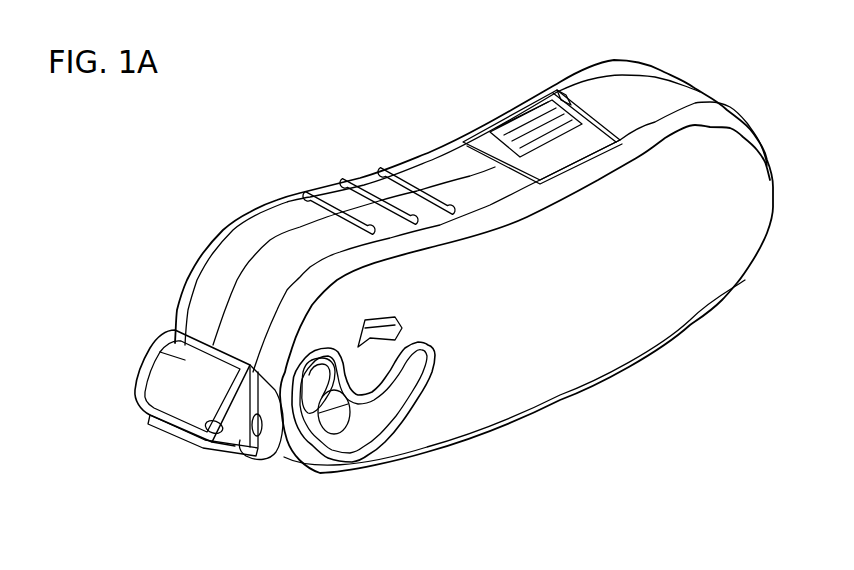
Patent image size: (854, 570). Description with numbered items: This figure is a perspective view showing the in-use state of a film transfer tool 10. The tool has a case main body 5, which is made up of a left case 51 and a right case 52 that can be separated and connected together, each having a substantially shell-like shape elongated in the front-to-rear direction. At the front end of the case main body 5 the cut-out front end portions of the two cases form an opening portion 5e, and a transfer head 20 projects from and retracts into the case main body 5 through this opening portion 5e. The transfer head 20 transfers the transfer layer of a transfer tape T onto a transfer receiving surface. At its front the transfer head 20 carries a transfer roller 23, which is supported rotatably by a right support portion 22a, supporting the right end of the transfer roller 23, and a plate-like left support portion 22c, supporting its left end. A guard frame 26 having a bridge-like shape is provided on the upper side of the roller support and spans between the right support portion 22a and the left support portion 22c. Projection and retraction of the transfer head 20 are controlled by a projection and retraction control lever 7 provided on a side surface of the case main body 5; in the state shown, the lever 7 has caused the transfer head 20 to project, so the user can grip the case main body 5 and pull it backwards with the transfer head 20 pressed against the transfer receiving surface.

The film transfer tool 10 is at (482, 88).
The case main body 5 is at (476, 270).
The left case 51 is at (609, 335).
The right case 52 is at (433, 165).
The opening portion 5e is at (261, 464).
The projection and retraction control lever 7 is at (336, 418).
The transfer head 20 is at (156, 364).
The right support portion 22a is at (182, 370).
The left support portion 22c is at (205, 430).
The transfer roller 23 is at (140, 388).
The guard frame 26 is at (180, 345).
The transfer tape T is at (155, 355).